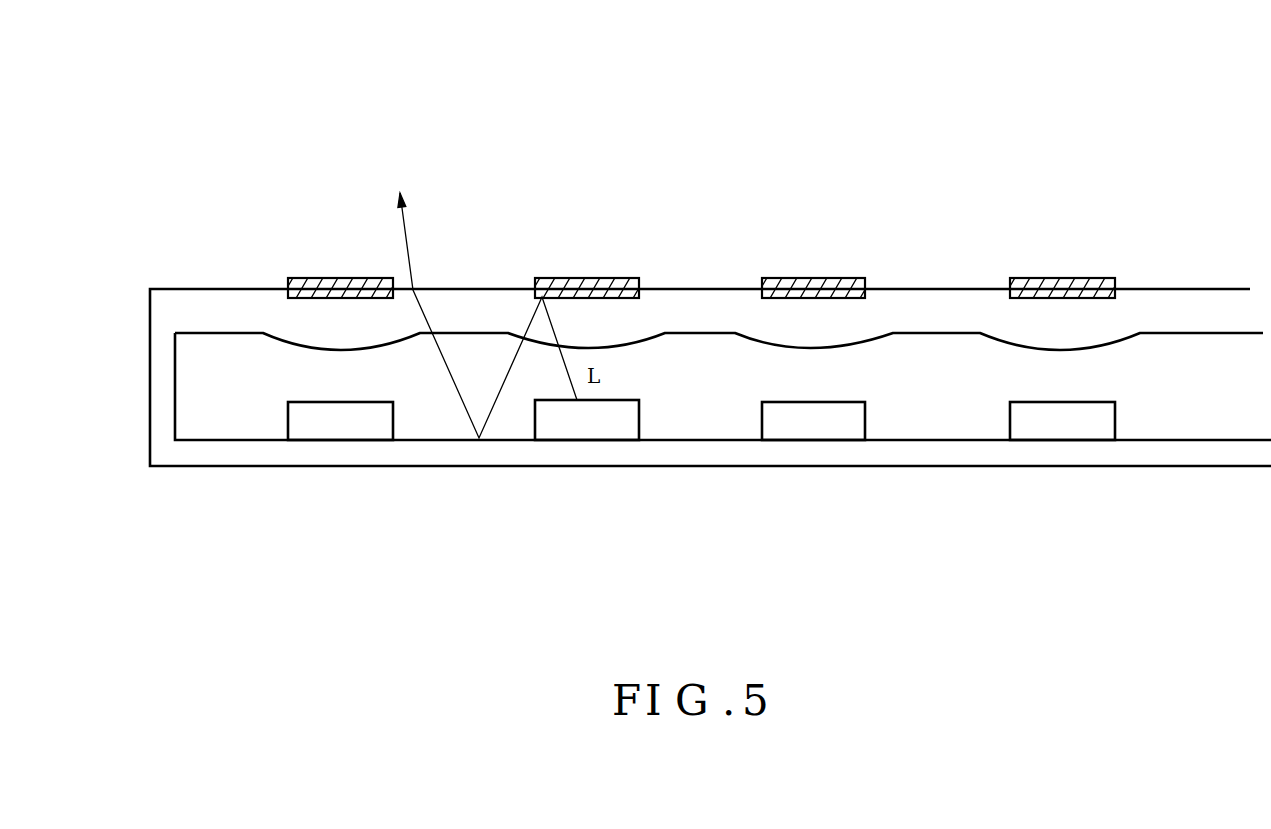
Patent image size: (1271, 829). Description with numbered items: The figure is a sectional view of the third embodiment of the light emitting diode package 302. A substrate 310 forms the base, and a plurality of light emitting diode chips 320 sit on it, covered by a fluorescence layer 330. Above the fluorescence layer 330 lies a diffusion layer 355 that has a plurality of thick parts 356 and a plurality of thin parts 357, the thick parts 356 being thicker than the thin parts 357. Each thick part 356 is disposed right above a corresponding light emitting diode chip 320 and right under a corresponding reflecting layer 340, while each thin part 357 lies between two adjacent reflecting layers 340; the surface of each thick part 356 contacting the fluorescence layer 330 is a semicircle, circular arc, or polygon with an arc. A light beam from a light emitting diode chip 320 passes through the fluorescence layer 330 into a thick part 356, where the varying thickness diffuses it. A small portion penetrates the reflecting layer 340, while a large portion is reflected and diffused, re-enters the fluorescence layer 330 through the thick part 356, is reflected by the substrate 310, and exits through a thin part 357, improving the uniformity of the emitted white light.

The light emitting diode package 302 is at (1077, 105).
The substrate 310 is at (228, 455).
The light emitting diode chip 320 is at (613, 432).
The fluorescence layer 330 is at (192, 390).
The reflecting layer 340 is at (787, 288).
The diffusion layer 355 is at (870, 563).
The thick part 356 is at (840, 325).
The thin part 357 is at (912, 317).